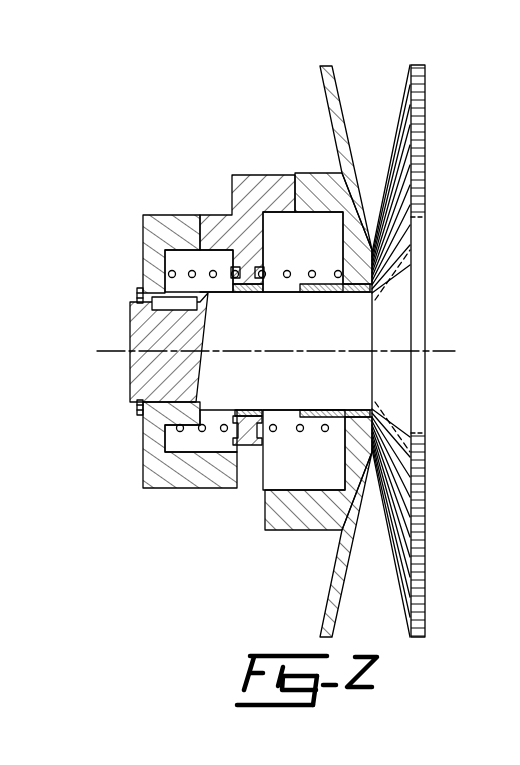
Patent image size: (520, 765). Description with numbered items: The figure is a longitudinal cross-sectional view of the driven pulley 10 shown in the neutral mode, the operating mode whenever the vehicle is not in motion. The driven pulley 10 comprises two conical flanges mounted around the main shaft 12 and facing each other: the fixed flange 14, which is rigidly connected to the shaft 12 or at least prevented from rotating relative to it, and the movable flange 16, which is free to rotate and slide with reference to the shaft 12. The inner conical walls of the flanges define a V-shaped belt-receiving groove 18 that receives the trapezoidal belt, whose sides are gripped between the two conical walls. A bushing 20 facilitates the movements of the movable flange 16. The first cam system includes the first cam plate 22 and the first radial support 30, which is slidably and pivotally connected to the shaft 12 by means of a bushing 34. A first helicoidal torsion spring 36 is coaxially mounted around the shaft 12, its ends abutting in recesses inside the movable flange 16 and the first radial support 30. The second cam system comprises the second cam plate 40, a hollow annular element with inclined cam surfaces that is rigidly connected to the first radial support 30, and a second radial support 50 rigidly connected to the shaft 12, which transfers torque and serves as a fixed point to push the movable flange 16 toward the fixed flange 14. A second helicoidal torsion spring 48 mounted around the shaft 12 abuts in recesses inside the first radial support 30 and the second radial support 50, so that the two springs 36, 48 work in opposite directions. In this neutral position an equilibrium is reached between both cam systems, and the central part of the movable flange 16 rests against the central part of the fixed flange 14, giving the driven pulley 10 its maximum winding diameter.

The driven pulley 10 is at (133, 133).
The main shaft 12 is at (150, 325).
The fixed flange 14 is at (426, 97).
The movable flange 16 is at (327, 103).
The belt-receiving groove 18 is at (387, 96).
The bushing 20 is at (287, 277).
The first cam plate 22 is at (318, 174).
The first radial support 30 is at (246, 174).
The bushing 34 is at (248, 292).
The first spring 36 is at (288, 292).
The second cam plate 40 is at (152, 214).
The second spring 48 is at (213, 277).
The second radial support 50 is at (143, 453).